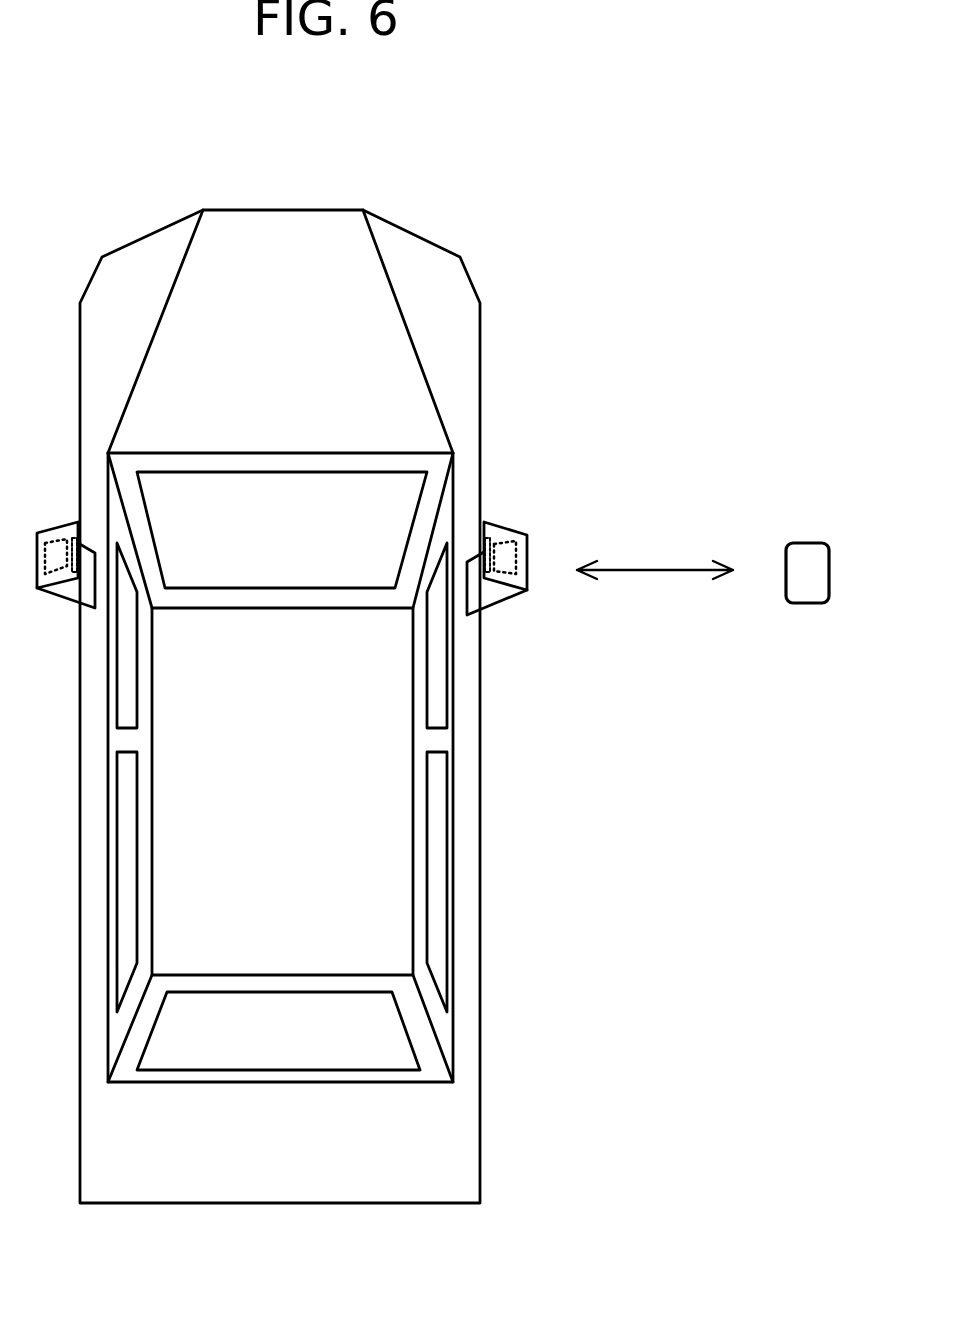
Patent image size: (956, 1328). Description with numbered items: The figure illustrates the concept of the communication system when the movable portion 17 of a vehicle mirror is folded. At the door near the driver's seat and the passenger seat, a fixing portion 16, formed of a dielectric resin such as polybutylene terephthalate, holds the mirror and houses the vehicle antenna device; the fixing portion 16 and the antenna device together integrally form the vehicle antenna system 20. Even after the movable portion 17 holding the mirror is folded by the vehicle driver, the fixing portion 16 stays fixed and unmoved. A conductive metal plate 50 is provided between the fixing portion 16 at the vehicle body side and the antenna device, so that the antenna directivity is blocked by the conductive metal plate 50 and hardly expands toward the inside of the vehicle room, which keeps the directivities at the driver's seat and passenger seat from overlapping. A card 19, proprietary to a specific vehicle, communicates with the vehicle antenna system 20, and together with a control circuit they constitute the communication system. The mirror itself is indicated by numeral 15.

The door mirror 15 is at (507, 532).
The fixing portion 16 is at (483, 527).
The movable portion 17 is at (490, 593).
The card 19 is at (802, 590).
The vehicle antenna system 20 is at (730, 360).
The conductive metal plate 50 is at (492, 530).